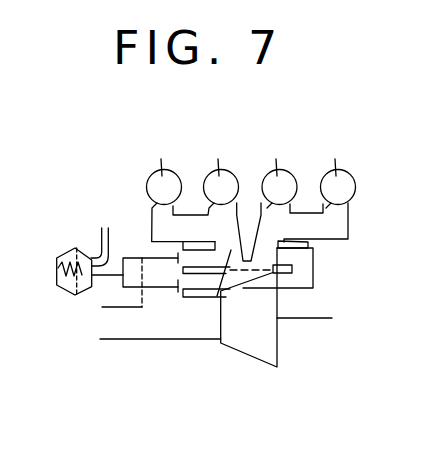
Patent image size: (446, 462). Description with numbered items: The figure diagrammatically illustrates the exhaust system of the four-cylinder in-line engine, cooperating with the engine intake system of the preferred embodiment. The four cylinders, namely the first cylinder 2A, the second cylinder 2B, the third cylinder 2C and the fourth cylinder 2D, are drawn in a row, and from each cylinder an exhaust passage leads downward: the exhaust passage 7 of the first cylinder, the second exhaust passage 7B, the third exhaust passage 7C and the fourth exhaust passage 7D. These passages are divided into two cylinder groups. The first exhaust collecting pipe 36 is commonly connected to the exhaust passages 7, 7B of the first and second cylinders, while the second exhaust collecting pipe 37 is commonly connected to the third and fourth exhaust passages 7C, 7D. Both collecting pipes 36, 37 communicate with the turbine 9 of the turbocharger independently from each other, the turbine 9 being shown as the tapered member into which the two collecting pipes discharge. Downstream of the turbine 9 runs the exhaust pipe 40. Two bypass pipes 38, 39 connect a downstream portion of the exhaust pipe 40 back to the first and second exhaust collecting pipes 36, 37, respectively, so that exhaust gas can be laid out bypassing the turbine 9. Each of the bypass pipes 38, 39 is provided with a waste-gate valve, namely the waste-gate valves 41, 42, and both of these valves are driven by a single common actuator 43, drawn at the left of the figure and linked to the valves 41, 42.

The exhaust passage 7 is at (150, 203).
The second exhaust passage 7B is at (207, 200).
The third exhaust passage 7C is at (264, 203).
The fourth exhaust passage 7D is at (322, 201).
The first cylinder 2A is at (157, 167).
The second cylinder 2B is at (222, 167).
The third cylinder 2C is at (277, 167).
The fourth cylinder 2D is at (335, 167).
The turbine 9 is at (246, 350).
The first exhaust collecting pipe 36 is at (213, 252).
The second exhaust collecting pipe 37 is at (310, 250).
The bypass pipe 38 is at (194, 252).
The bypass pipe 39 is at (313, 275).
The exhaust pipe 40 is at (145, 328).
The waste-gate valve 41 is at (178, 257).
The waste-gate valve 42 is at (178, 290).
The actuator 43 is at (65, 254).